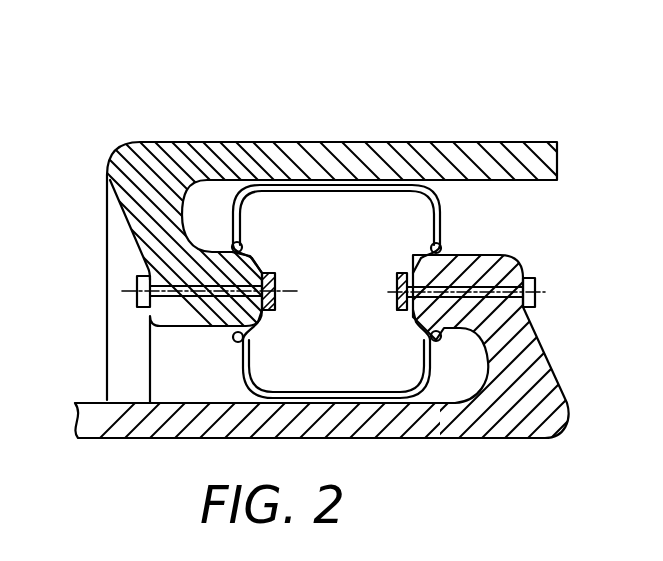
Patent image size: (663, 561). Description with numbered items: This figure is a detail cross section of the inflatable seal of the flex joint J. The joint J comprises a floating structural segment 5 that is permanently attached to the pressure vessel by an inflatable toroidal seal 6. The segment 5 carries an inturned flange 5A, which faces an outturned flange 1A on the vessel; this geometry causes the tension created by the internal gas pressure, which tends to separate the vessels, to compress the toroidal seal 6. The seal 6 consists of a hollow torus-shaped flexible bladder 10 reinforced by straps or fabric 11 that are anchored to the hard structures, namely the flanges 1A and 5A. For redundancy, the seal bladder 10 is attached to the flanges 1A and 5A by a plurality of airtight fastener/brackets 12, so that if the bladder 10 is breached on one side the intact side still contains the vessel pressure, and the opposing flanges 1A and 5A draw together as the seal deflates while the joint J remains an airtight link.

The flex joint J is at (103, 137).
The floating structural segment 5 is at (370, 143).
The inturned flange 5A is at (172, 313).
The inflatable toroidal seal 6 is at (312, 184).
The flexible bladder 10 is at (424, 249).
The straps or fabric 11 is at (430, 203).
The outturned flange 1A is at (487, 255).
The airtight fastener/brackets 12 is at (535, 280).